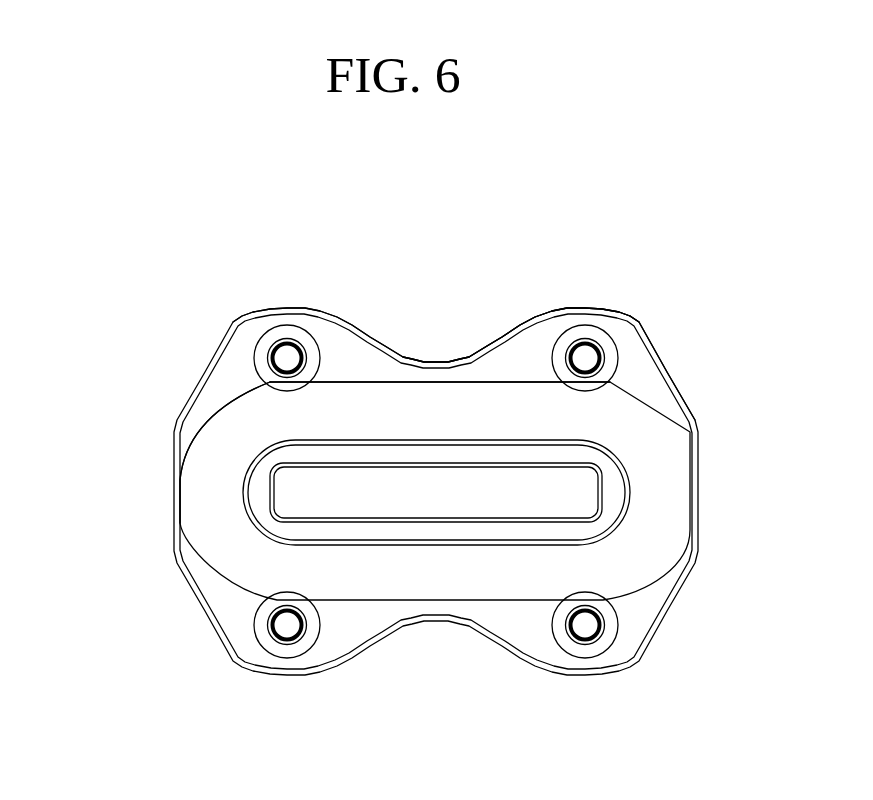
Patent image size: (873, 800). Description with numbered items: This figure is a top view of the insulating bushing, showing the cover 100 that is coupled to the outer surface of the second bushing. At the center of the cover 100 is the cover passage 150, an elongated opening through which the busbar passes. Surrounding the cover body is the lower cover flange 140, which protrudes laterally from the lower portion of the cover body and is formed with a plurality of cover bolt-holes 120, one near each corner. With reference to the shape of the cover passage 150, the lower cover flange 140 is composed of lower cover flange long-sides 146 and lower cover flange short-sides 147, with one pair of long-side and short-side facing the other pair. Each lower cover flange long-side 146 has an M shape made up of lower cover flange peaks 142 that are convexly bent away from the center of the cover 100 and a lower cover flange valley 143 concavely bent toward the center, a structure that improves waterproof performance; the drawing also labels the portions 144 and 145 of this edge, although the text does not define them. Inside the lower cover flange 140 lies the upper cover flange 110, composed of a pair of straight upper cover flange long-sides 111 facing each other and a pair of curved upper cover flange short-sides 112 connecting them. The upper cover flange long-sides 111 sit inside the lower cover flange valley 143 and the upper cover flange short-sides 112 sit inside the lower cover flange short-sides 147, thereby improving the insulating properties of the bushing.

The cover 100 is at (203, 242).
The upper cover flange 110 is at (315, 452).
The upper cover flange long-sides 111 is at (327, 384).
The upper cover flange short-sides 112 is at (203, 430).
The cover bolt-holes 120 is at (277, 358).
The lower cover flange 140 is at (640, 606).
The lower cover flange peaks 142 is at (577, 323).
The lower cover flange valley 143 is at (431, 348).
The inclined portion of flange edge 144 is at (512, 334).
The side inclined portion of flange edge 145 is at (658, 338).
The lower cover flange long-sides 146 is at (415, 230).
The lower cover flange short-sides 147 is at (700, 443).
The cover passage 150 is at (430, 497).